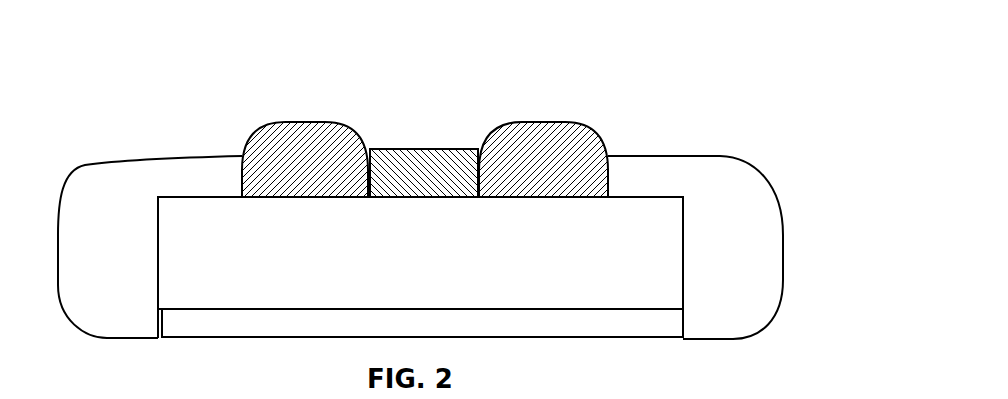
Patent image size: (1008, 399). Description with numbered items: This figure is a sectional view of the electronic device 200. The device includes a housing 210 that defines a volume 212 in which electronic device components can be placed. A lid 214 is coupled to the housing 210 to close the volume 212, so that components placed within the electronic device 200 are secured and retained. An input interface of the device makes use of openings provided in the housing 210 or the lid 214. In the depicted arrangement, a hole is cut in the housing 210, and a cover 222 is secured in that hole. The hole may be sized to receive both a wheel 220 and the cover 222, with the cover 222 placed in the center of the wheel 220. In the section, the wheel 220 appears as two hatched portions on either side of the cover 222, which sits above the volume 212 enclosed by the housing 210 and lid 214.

The electronic device 200 is at (603, 47).
The housing 210 is at (747, 258).
The volume 212 is at (506, 242).
The lid 214 is at (622, 323).
The wheel 220 is at (278, 130).
The cover 222 is at (452, 160).